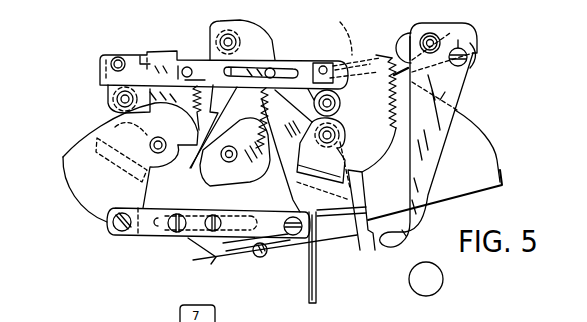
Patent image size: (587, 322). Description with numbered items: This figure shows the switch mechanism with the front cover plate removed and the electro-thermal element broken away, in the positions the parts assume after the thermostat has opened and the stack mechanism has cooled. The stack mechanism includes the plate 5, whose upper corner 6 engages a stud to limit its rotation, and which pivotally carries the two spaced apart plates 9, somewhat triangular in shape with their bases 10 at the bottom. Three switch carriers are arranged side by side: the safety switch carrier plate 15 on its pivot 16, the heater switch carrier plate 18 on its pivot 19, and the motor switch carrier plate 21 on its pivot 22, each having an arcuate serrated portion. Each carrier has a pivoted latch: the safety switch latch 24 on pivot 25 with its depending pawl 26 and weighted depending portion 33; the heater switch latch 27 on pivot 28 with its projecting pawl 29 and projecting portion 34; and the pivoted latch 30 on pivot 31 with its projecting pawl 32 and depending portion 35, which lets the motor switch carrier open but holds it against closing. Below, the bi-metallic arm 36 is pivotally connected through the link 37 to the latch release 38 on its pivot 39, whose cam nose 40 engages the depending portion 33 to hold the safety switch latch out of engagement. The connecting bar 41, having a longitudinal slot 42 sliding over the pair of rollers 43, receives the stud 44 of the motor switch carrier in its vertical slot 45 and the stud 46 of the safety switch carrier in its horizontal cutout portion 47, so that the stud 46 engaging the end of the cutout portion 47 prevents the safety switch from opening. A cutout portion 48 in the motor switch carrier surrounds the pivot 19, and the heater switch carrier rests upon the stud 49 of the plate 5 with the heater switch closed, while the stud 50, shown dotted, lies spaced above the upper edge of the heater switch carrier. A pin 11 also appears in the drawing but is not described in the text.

The plate 5 is at (322, 229).
The upper corner 6 is at (410, 35).
The plates 9 is at (460, 134).
The bases 10 is at (485, 187).
The pin 11 is at (413, 281).
The carrier plate 15 is at (135, 116).
The pivot 16 is at (115, 100).
The carrier plate 18 is at (374, 232).
The pivot 19 is at (355, 159).
The carrier plate 21 is at (376, 56).
The pivot 22 is at (341, 104).
The safety switch latch 24 is at (247, 33).
The pivot 25 is at (224, 37).
The depending pawl 26 is at (205, 70).
The heater switch latch 27 is at (221, 160).
The pivot 28 is at (200, 184).
The projecting pawl 29 is at (247, 126).
The pivoted latch 30 is at (466, 64).
The pivot 31 is at (430, 40).
The projecting pawl 32 is at (400, 76).
The depending portion 33 is at (152, 164).
The projecting portion 34 is at (255, 184).
The depending portion 35 is at (422, 188).
The arm 36 is at (316, 302).
The link 37 is at (150, 233).
The latch release 38 is at (80, 160).
The pivot 39 is at (150, 143).
The cam nose 40 is at (187, 133).
The connecting bar 41 is at (98, 66).
The longitudinal slot 42 is at (233, 71).
The rollers 43 is at (272, 69).
The stud 44 is at (323, 65).
The vertical slot 45 is at (325, 79).
The stud 46 is at (118, 57).
The cutout portion 47 is at (142, 56).
The cutout portion 48 is at (342, 134).
The stud 49 is at (265, 258).
The stud 50 is at (338, 29).